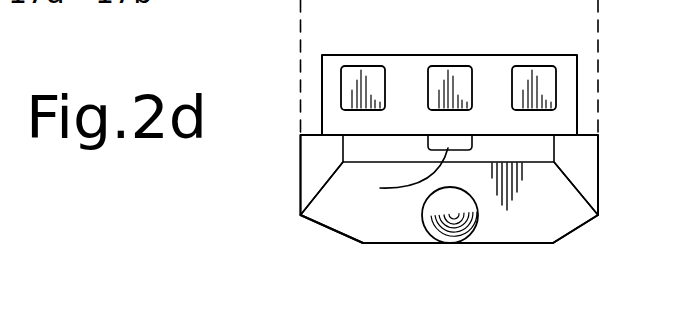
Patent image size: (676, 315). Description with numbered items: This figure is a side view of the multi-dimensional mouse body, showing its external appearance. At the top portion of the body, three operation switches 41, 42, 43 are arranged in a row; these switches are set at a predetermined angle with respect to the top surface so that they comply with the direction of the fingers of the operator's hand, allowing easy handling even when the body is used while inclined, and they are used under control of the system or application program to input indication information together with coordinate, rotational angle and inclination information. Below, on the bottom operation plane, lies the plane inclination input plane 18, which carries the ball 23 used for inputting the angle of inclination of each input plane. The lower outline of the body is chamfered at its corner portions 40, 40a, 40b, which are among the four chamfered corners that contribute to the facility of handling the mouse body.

The chamfered corner portion 40 is at (489, 149).
The chamfered corner portion 40a is at (580, 170).
The chamfered corner portion 40b is at (313, 172).
The plane inclination input plane 18 is at (343, 210).
The ball 23 is at (426, 208).
The operation switch 41 is at (535, 66).
The operation switch 42 is at (452, 66).
The operation switch 43 is at (365, 66).